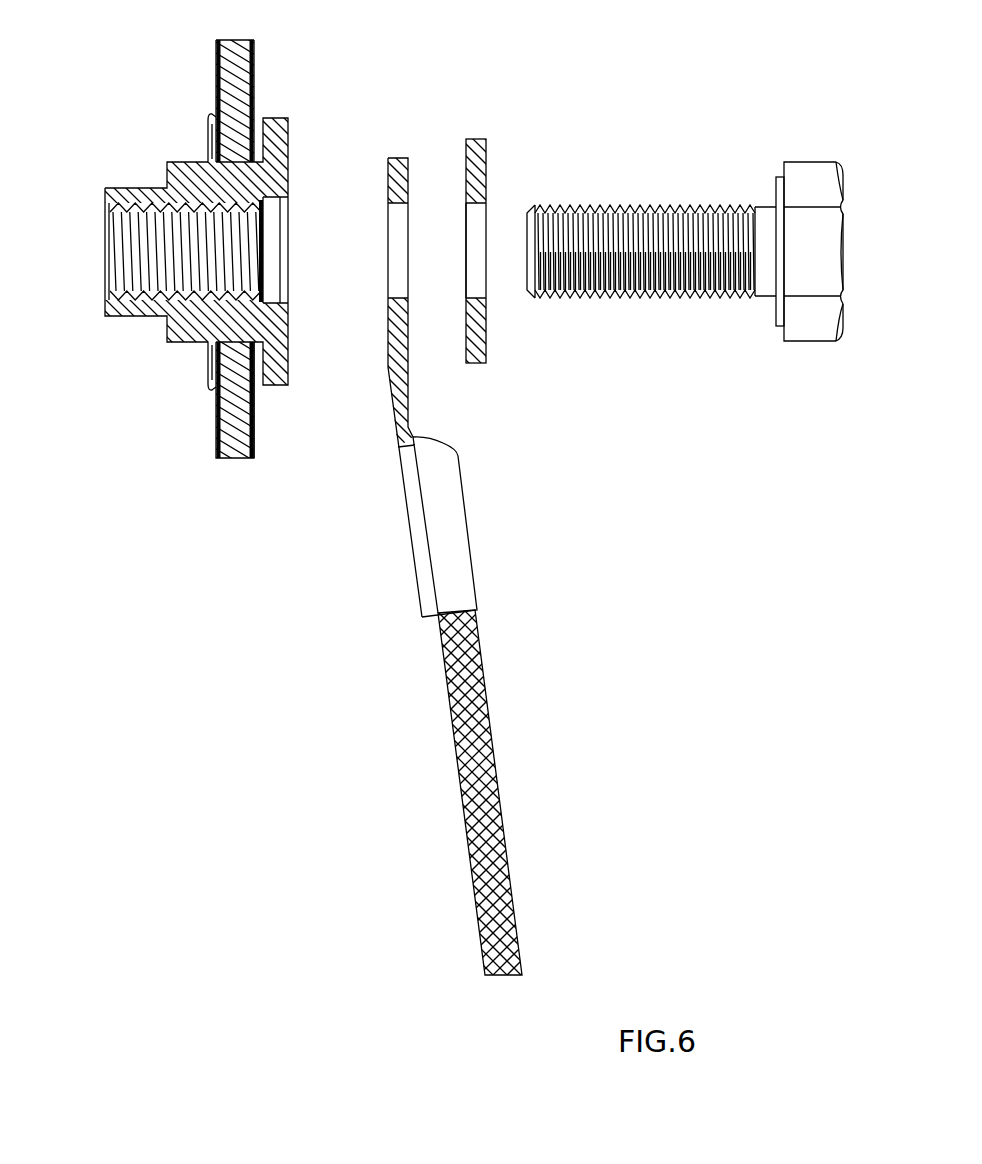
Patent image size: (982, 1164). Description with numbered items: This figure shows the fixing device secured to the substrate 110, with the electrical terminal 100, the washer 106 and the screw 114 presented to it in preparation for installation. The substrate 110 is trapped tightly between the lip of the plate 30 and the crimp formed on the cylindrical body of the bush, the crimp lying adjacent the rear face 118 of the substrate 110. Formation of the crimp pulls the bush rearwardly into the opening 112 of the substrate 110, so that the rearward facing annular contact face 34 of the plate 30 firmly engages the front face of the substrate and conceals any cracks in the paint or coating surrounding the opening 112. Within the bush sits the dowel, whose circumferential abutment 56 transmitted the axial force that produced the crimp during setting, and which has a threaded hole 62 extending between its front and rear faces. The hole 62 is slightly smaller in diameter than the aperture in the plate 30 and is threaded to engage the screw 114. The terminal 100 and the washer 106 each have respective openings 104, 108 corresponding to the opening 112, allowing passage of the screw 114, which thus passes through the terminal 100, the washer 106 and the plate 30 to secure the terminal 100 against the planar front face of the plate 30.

The plate 30 is at (290, 350).
The annular contact face 34 is at (247, 420).
The circumferential abutment 56 is at (175, 162).
The hole 62 is at (138, 258).
The electrical terminal 100 is at (470, 735).
The opening 104 is at (395, 227).
The washer 106 is at (473, 148).
The opening 108 is at (475, 223).
The substrate 110 is at (235, 433).
The opening 112 is at (235, 153).
The screw 114 is at (818, 182).
The rear face 118 is at (213, 403).